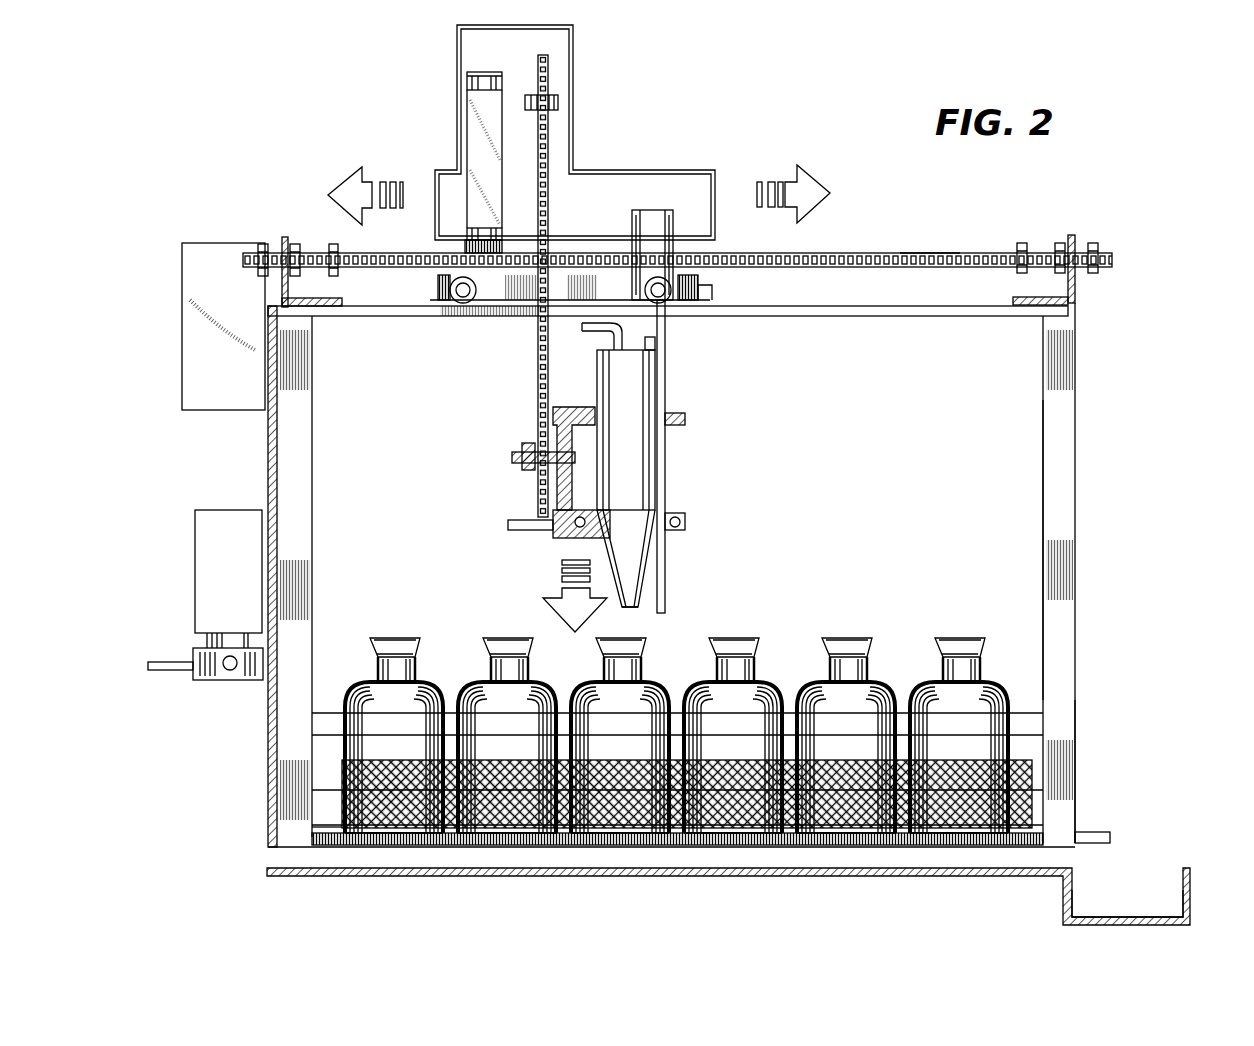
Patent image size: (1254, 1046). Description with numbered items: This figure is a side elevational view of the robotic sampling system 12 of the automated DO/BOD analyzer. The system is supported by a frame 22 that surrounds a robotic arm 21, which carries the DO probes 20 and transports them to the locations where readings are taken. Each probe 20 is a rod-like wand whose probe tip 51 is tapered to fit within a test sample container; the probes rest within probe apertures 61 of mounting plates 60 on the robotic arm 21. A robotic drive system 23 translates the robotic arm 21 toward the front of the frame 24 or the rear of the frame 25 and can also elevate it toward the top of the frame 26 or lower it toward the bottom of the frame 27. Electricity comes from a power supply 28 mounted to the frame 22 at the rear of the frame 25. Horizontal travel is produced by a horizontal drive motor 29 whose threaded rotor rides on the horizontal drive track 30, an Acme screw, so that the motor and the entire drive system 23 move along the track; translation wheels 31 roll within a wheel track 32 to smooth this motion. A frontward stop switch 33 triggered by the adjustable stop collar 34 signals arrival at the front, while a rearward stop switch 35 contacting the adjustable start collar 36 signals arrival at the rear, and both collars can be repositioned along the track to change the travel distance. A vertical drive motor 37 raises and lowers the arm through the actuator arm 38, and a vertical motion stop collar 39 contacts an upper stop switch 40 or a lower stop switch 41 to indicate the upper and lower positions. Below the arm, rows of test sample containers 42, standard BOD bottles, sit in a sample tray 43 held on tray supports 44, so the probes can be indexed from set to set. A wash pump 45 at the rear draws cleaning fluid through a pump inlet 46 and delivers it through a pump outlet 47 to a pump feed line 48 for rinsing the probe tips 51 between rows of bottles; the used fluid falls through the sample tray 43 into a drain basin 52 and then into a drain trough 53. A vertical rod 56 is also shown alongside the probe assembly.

The robotic sampling system 12 is at (1077, 412).
The DO probes 20 is at (640, 358).
The robotic arm 21 is at (651, 465).
The frame 22 is at (1078, 478).
The robotic drive system 23 is at (637, 170).
The front of the frame 24 is at (1058, 243).
The rear of the frame 25 is at (287, 237).
The top of the frame 26 is at (1077, 280).
The bottom of the frame 27 is at (1078, 768).
The power supply 28 is at (238, 243).
The horizontal drive motor 29 is at (675, 212).
The horizontal drive track 30 is at (862, 253).
The translation wheels 31 is at (452, 278).
The wheel track 32 is at (925, 297).
The frontward stop switch 33 is at (700, 282).
The adjustable stop collar 34 is at (1020, 243).
The rearward stop switch 35 is at (438, 284).
The adjustable start collar 36 is at (333, 244).
The vertical drive motor 37 is at (505, 303).
The actuator arm 38 is at (538, 328).
The vertical motion stop collar 39 is at (566, 98).
The upper stop switch 40 is at (517, 92).
The lower stop switch 41 is at (517, 212).
The test sample containers 42 is at (982, 660).
The sample tray 43 is at (1030, 760).
The tray supports 44 is at (395, 847).
The wash pump 45 is at (245, 510).
The pump inlet 46 is at (178, 670).
The pump outlet 47 is at (230, 670).
The pump feed line 48 is at (535, 522).
The probe tips 51 is at (640, 550).
The drain basin 52 is at (590, 877).
The drain trough 53 is at (1160, 895).
The vertical rod 56 is at (666, 460).
The mounting plates 60 is at (686, 518).
The probe apertures 61 is at (690, 532).